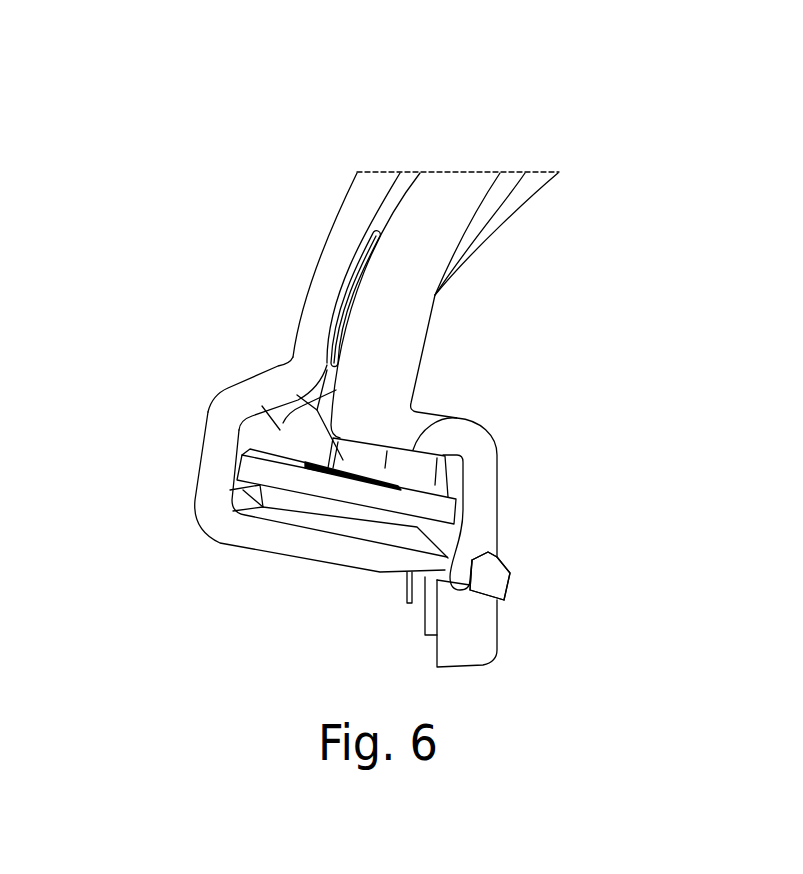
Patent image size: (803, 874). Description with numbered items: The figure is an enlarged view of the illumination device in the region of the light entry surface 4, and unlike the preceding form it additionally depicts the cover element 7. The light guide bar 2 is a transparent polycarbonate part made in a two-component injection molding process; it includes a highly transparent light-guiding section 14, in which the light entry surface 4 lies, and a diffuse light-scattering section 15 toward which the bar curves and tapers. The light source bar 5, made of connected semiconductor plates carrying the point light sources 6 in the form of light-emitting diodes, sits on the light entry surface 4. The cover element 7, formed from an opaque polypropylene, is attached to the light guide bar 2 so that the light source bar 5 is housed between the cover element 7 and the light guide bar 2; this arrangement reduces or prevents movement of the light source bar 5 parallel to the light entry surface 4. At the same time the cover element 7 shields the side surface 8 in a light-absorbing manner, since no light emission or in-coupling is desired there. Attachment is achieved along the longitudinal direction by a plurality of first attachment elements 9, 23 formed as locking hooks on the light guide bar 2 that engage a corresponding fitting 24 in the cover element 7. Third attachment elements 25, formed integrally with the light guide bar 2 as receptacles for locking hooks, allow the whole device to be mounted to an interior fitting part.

The light guide bar 2 is at (432, 262).
The light entry surface 4 is at (417, 440).
The light source bar 5 is at (240, 465).
The point light sources 6 is at (347, 457).
The cover element 7 is at (250, 383).
The side surface 8 is at (371, 232).
The first attachment elements 9 is at (460, 572).
The latching block 23 is at (490, 576).
The light-guiding section 14 is at (510, 295).
The light-scattering section 15 is at (517, 203).
The fitting 24 is at (437, 575).
The third attachment elements 25 is at (473, 627).